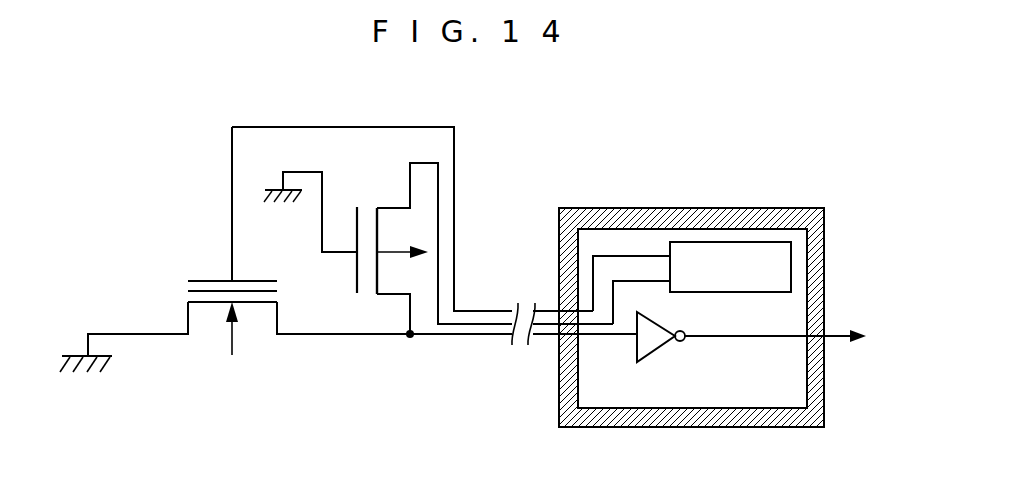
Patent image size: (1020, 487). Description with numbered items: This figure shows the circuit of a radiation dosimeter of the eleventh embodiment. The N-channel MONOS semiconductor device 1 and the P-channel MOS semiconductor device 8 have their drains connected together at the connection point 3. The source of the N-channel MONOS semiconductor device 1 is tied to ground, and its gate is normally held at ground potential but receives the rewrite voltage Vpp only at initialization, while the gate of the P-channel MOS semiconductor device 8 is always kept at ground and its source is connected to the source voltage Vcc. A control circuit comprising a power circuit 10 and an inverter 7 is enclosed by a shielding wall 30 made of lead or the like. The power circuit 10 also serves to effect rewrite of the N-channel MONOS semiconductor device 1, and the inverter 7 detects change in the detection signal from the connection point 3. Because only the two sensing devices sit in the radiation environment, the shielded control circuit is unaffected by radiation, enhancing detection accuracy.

The N-channel MONOS semiconductor device 1 is at (183, 290).
The P-channel MOS semiconductor device 8 is at (370, 196).
The connection point 3 is at (410, 338).
The shielding wall 30 is at (678, 208).
The power circuit 10 is at (710, 293).
The inverter 7 is at (653, 355).